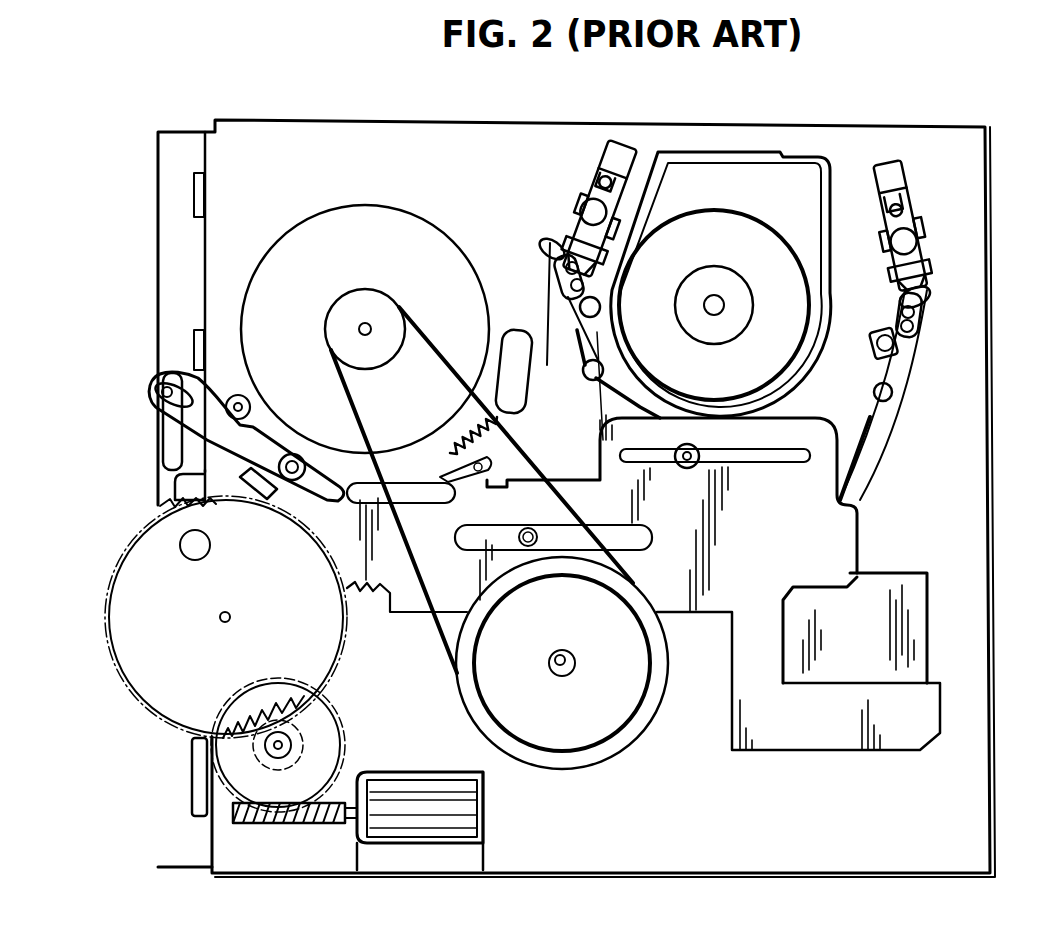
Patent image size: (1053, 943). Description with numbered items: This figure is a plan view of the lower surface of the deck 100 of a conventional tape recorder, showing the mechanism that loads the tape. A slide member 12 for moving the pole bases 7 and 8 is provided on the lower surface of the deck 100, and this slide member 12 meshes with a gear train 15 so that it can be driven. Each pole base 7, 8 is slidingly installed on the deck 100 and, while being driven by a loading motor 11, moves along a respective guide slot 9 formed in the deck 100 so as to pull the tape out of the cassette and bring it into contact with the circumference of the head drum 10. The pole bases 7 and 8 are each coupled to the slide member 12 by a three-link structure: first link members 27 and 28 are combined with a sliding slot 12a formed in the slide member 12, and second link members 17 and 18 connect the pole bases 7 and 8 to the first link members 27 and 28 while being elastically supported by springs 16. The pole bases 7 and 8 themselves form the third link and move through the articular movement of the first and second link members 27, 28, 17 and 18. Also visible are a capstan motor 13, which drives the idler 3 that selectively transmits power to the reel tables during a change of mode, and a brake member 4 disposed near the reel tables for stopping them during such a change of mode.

The deck 100 is at (238, 140).
The capstan motor 13 is at (333, 222).
The head drum 10 is at (715, 235).
The pole base 8 is at (592, 185).
The pole base 7 is at (905, 227).
The springs 16 is at (560, 258).
The second link member 18 is at (570, 290).
The second link member 17 is at (917, 323).
The guide slots 9 is at (560, 338).
The first link member 28 is at (607, 392).
The first link member 27 is at (870, 415).
The sliding slot 12a is at (783, 457).
The slide member 12 is at (928, 585).
The brake member 4 is at (226, 654).
The gear train 15 is at (122, 687).
The loading motor 11 is at (467, 817).
The idler 3 is at (595, 756).